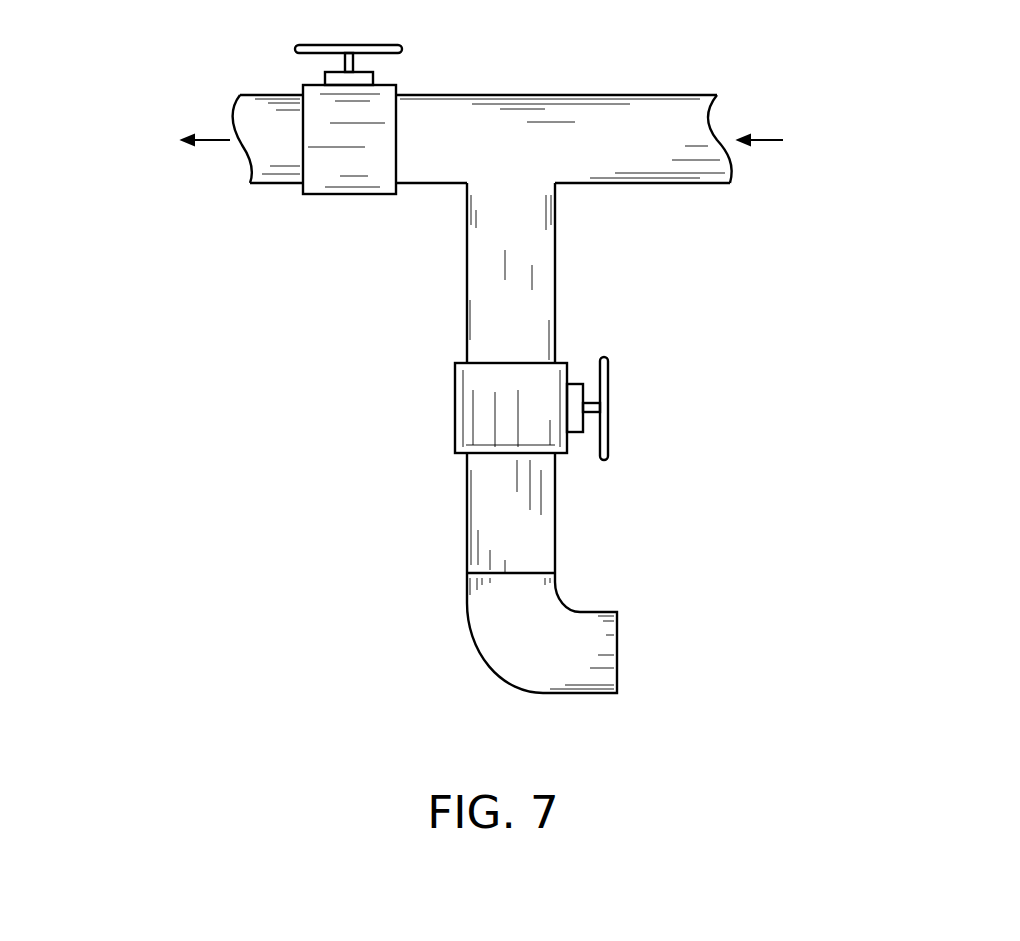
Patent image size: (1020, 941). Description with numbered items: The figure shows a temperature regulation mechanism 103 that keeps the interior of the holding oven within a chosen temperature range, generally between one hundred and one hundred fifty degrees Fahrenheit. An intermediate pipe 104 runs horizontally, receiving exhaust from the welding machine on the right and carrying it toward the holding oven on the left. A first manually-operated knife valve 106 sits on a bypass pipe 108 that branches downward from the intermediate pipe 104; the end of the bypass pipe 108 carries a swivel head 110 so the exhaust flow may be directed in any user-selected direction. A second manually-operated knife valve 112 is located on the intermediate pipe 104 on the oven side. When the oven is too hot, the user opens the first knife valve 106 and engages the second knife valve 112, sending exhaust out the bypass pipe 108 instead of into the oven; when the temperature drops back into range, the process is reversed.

The temperature regulation mechanism 103 is at (293, 527).
The intermediate pipe 104 is at (596, 95).
The first manually-operated knife valve 106 is at (455, 410).
The bypass pipe 108 is at (557, 512).
The swivel head 110 is at (468, 628).
The second manually-operated knife valve 112 is at (348, 195).